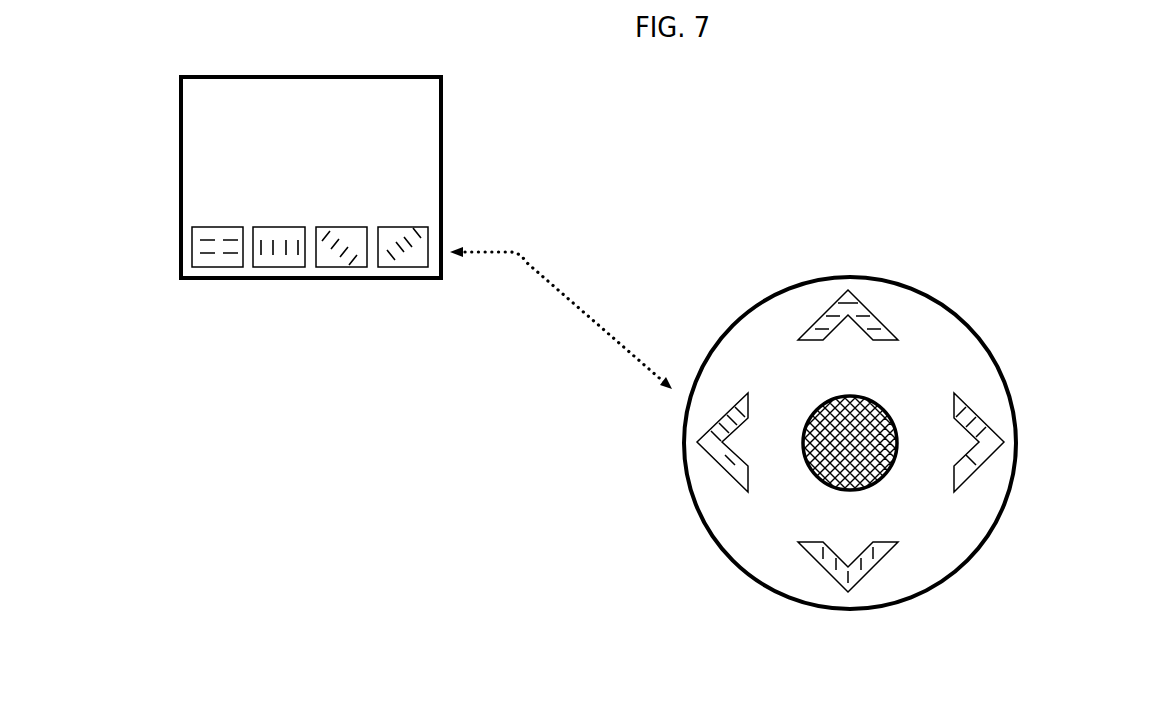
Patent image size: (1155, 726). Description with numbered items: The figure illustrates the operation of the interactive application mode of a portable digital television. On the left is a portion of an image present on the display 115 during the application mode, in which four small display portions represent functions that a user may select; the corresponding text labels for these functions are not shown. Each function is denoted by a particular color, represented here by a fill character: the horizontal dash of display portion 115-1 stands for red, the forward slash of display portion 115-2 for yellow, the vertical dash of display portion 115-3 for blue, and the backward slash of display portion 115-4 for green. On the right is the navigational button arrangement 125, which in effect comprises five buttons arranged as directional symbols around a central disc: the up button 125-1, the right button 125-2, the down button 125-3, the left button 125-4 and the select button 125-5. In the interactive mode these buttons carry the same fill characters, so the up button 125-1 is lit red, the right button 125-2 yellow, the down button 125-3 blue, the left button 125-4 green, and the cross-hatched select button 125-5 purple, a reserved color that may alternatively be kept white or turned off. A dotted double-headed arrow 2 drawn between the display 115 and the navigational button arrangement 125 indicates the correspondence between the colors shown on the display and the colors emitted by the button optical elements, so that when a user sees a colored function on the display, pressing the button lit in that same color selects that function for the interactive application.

The association between display and navigation pad 2 is at (513, 240).
The display 115 is at (169, 140).
The display portion 115-1 is at (206, 290).
The display portion 115-2 is at (340, 290).
The display portion 115-3 is at (280, 290).
The display portion 115-4 is at (415, 290).
The navigational button arrangement 125 is at (740, 298).
The up button 125-1 is at (885, 313).
The right button 125-2 is at (997, 417).
The down button 125-3 is at (823, 578).
The left button 125-4 is at (713, 465).
The select button 125-5 is at (897, 492).